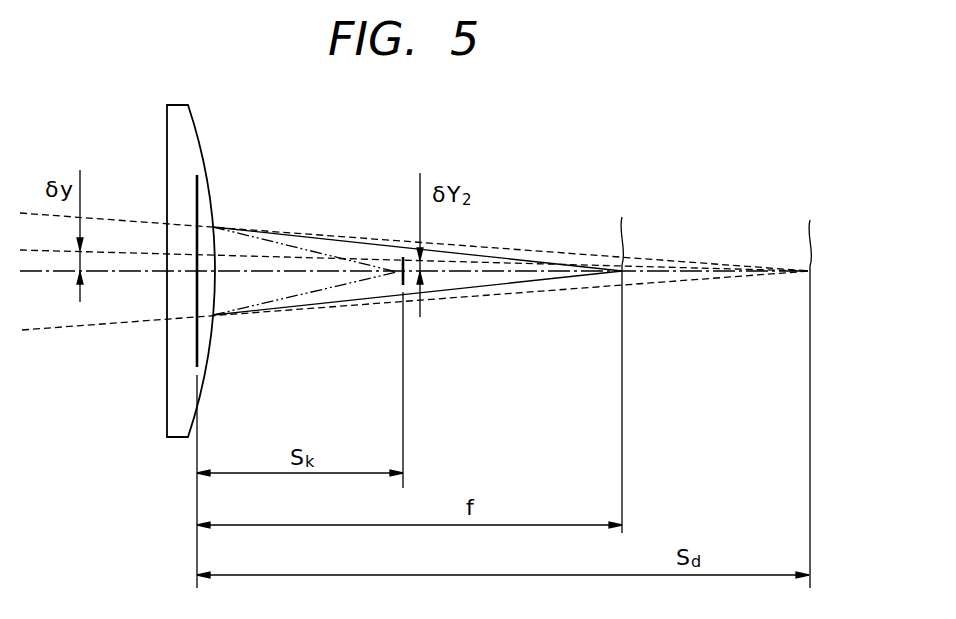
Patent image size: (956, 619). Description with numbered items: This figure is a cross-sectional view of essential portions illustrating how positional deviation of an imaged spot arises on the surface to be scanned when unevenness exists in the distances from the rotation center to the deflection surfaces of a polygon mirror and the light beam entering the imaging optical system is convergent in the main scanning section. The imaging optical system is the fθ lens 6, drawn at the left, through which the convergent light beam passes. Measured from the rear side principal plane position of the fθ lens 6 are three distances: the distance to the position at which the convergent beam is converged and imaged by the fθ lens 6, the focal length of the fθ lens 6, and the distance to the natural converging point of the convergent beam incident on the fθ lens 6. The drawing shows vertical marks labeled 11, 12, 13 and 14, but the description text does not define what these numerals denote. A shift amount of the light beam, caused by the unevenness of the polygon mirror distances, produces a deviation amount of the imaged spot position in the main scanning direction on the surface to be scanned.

The fθ lens 6 is at (184, 112).
The lens surface / principal plane 11 is at (198, 184).
The back focal point 12 is at (398, 271).
The focal plane position at distance f 13 is at (624, 363).
The convergence point at distance Sd 14 is at (810, 390).